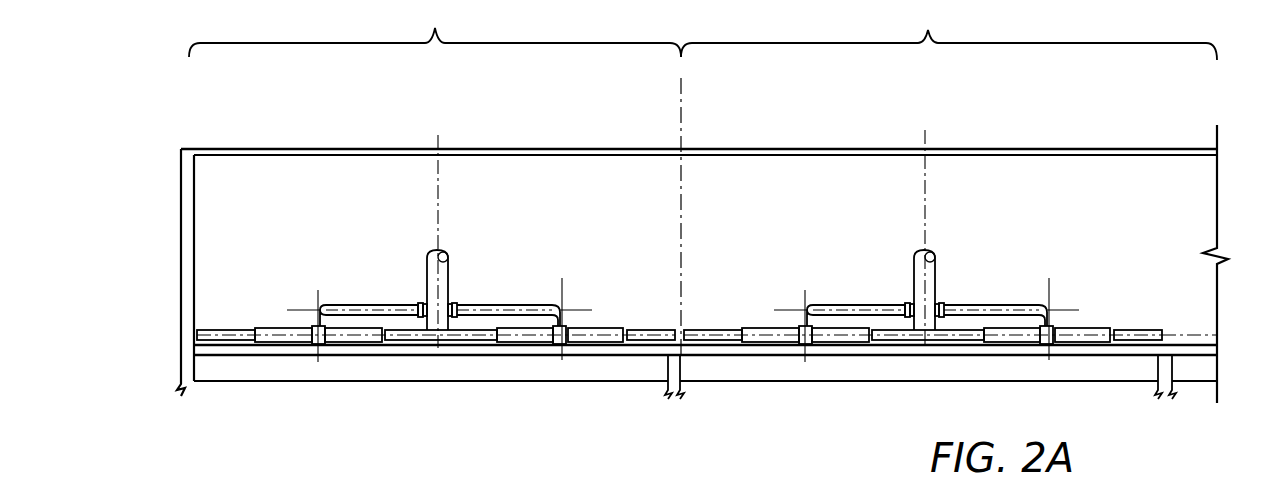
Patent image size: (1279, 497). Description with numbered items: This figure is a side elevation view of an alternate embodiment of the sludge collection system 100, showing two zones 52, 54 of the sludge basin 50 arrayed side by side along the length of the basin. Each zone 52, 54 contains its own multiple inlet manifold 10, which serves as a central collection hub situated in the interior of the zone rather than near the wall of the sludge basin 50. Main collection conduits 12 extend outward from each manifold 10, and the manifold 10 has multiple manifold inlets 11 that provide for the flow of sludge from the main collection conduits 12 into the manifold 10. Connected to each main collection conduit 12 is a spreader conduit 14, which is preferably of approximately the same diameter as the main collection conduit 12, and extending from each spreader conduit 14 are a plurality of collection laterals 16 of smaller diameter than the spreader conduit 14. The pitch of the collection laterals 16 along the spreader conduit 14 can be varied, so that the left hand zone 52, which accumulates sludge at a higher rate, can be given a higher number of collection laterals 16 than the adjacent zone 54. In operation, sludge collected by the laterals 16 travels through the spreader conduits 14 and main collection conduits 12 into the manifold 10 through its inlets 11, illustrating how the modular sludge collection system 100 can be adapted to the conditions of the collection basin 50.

The multiple inlet manifold 10 is at (445, 280).
The manifold inlets 11 is at (426, 302).
The main collection conduit 12 is at (367, 305).
The spreader conduit 14 is at (342, 345).
The collection laterals 16 is at (222, 328).
The sludge basin 50 is at (194, 238).
The zone 52 is at (616, 211).
The zone 54 is at (1083, 203).
The sludge collection system 100 is at (1007, 292).